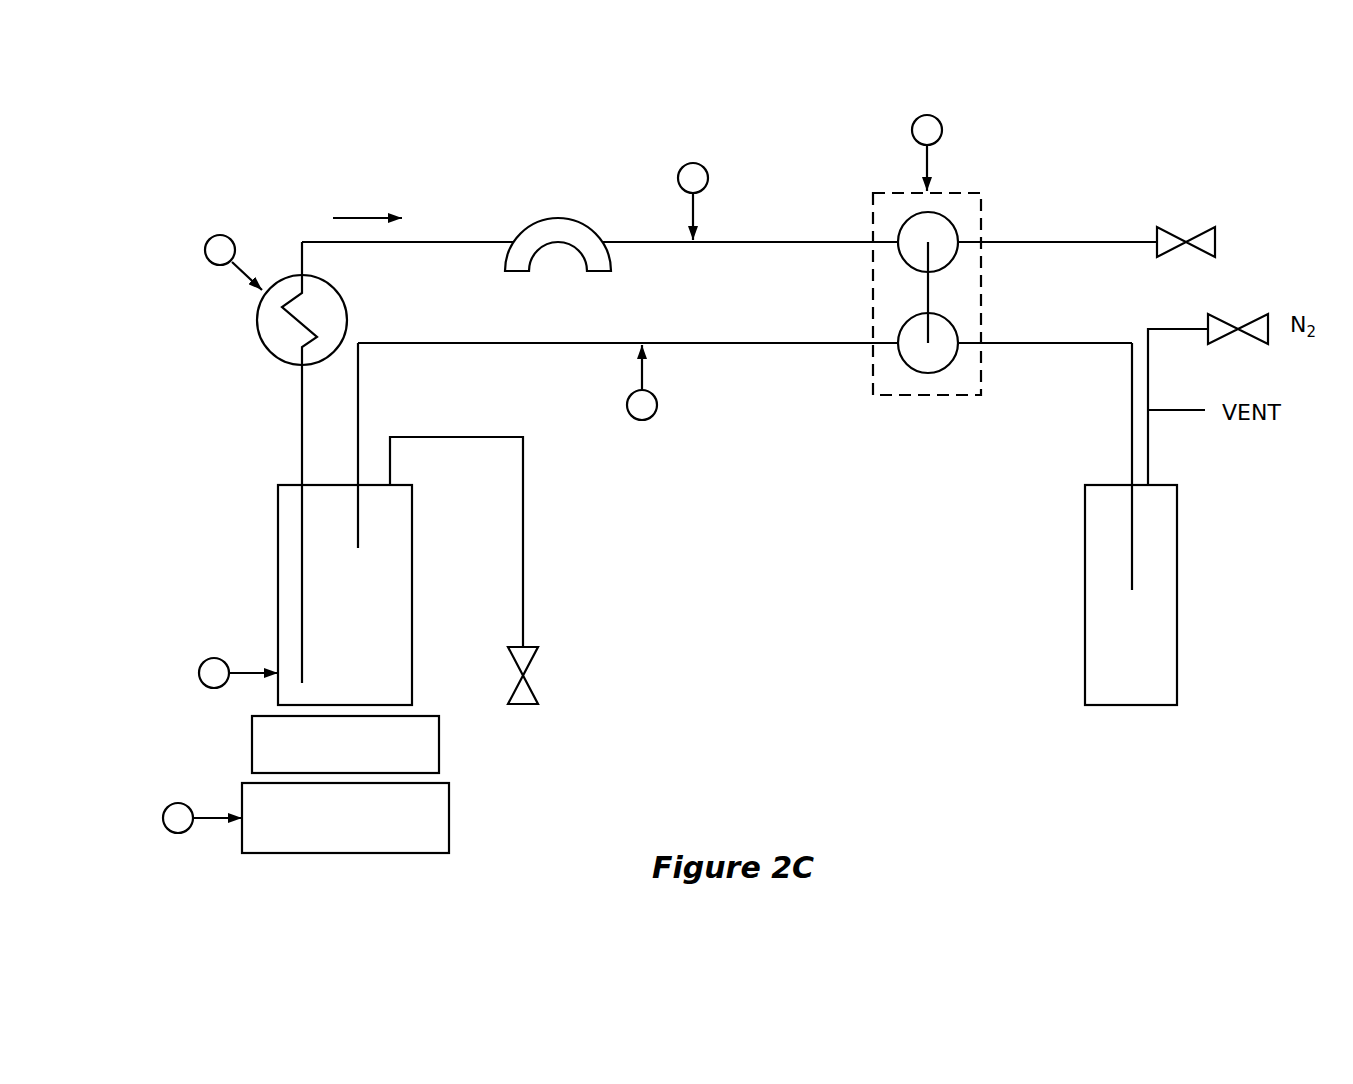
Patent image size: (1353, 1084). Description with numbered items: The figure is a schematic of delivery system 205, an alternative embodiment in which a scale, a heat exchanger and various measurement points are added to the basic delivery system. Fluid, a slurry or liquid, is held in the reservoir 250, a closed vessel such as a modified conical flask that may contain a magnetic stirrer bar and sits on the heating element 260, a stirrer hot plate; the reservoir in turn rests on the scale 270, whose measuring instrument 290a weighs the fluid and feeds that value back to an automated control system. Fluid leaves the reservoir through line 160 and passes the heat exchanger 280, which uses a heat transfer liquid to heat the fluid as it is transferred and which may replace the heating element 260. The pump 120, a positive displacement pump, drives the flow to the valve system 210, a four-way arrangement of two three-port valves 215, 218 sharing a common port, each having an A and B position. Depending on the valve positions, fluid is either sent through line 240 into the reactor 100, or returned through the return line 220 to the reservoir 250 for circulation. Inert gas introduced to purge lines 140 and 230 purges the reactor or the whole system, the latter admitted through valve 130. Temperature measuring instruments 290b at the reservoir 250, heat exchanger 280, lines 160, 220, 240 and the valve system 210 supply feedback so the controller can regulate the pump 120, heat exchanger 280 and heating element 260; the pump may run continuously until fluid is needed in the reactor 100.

The delivery system 205 is at (157, 120).
The reactor 100 is at (1085, 558).
The pump 120 is at (543, 218).
The nitrogen valve 130 is at (533, 690).
The purge line 140 is at (523, 547).
The delivery line 160 is at (302, 450).
The valve system 210 is at (983, 222).
The three-port valve 215 is at (907, 220).
The three-port valve 218 is at (904, 358).
The return line 220 is at (738, 343).
The purge line 230 is at (1095, 243).
The delivery line 240 is at (1112, 348).
The reservoir 250 is at (278, 595).
The heating element 260 is at (439, 748).
The scale 270 is at (449, 817).
The heat exchanger 280 is at (257, 320).
The measuring instrument 290a is at (163, 819).
The temperature measuring instrument 290b is at (204, 249).